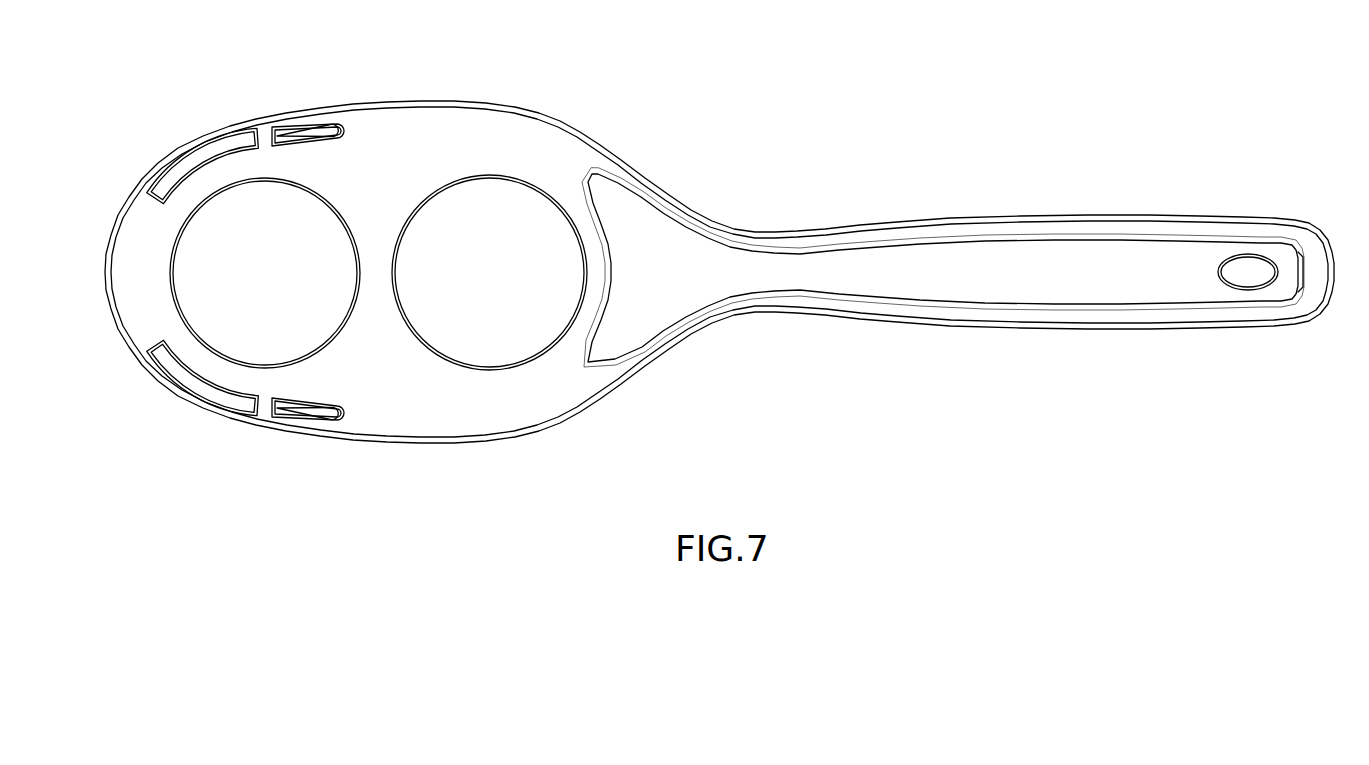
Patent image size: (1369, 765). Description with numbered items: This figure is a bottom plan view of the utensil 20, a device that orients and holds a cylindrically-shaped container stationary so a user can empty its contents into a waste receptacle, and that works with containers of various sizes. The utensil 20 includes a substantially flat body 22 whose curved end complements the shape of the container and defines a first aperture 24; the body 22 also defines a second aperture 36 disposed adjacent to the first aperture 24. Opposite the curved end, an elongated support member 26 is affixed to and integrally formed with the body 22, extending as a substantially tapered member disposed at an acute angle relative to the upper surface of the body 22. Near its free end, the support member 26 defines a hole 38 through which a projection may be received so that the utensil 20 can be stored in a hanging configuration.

The utensil 20 is at (727, 387).
The body 22 is at (495, 420).
The first aperture 24 is at (323, 233).
The second aperture 36 is at (478, 233).
The support member 26 is at (1100, 295).
The hole 38 is at (1233, 267).